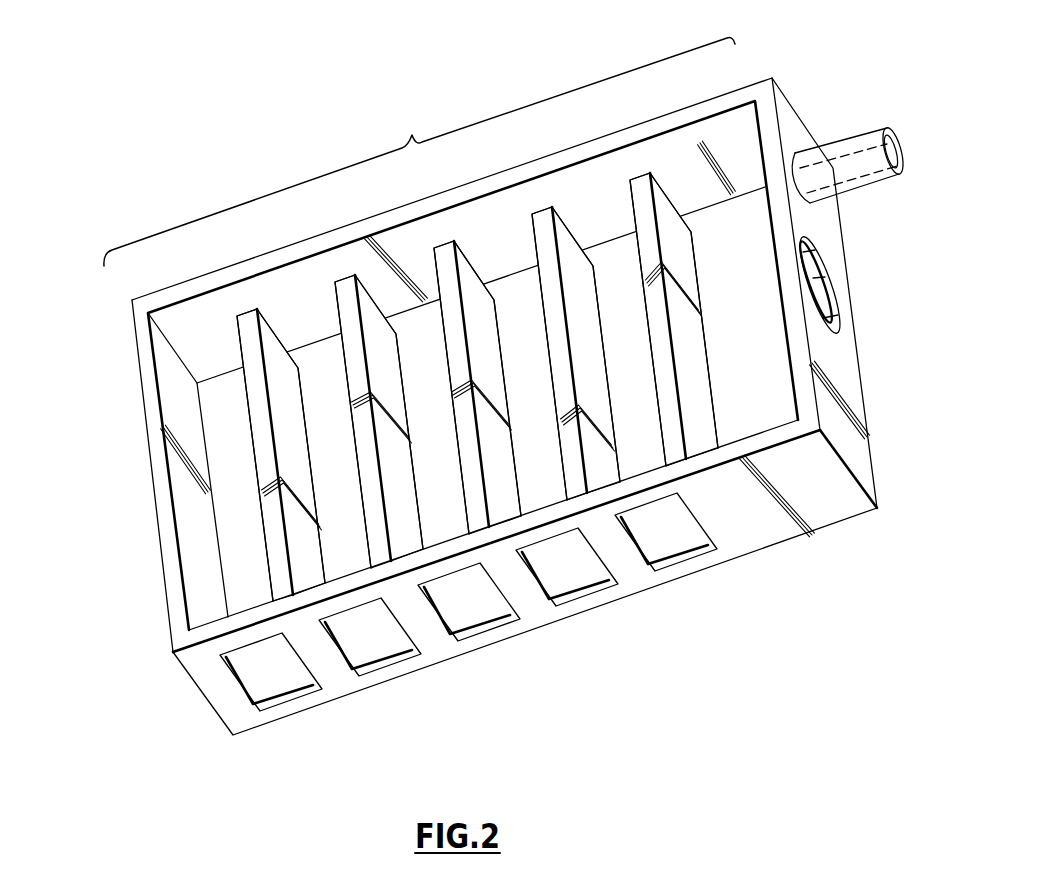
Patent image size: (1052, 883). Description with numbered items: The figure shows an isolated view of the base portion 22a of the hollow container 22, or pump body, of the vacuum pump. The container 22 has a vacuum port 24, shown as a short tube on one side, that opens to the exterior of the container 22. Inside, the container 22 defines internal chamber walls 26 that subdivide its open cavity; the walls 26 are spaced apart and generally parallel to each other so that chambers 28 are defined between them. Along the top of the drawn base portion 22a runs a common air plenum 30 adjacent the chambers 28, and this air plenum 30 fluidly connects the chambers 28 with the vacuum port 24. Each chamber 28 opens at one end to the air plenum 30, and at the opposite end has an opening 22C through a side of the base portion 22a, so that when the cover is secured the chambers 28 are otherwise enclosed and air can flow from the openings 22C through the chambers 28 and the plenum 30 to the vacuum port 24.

The hollow container 22 is at (481, 416).
The base portion 22a is at (134, 358).
The opening 22C is at (250, 687).
The vacuum port 24 is at (857, 143).
The internal chamber walls 26 is at (307, 555).
The chambers 28 is at (527, 341).
The common air plenum 30 is at (410, 133).